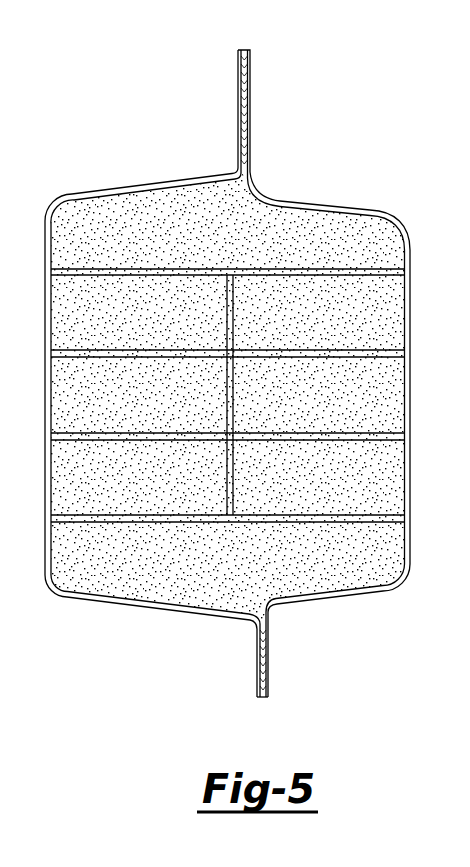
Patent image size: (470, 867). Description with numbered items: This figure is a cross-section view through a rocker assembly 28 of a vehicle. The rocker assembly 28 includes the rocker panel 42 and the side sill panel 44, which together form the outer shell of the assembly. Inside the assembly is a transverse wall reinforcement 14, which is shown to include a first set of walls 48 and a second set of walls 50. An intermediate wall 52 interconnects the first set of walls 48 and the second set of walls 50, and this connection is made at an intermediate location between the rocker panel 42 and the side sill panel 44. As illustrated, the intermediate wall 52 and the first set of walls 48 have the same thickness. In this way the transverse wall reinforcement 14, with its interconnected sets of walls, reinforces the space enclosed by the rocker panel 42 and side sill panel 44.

The rocker assembly 28 is at (245, 362).
The rocker panel 42 is at (140, 187).
The side sill panel 44 is at (300, 202).
The transverse wall reinforcement 14 is at (355, 260).
The first set of walls 48 is at (340, 350).
The second set of walls 50 is at (155, 321).
The intermediate wall 52 is at (235, 398).